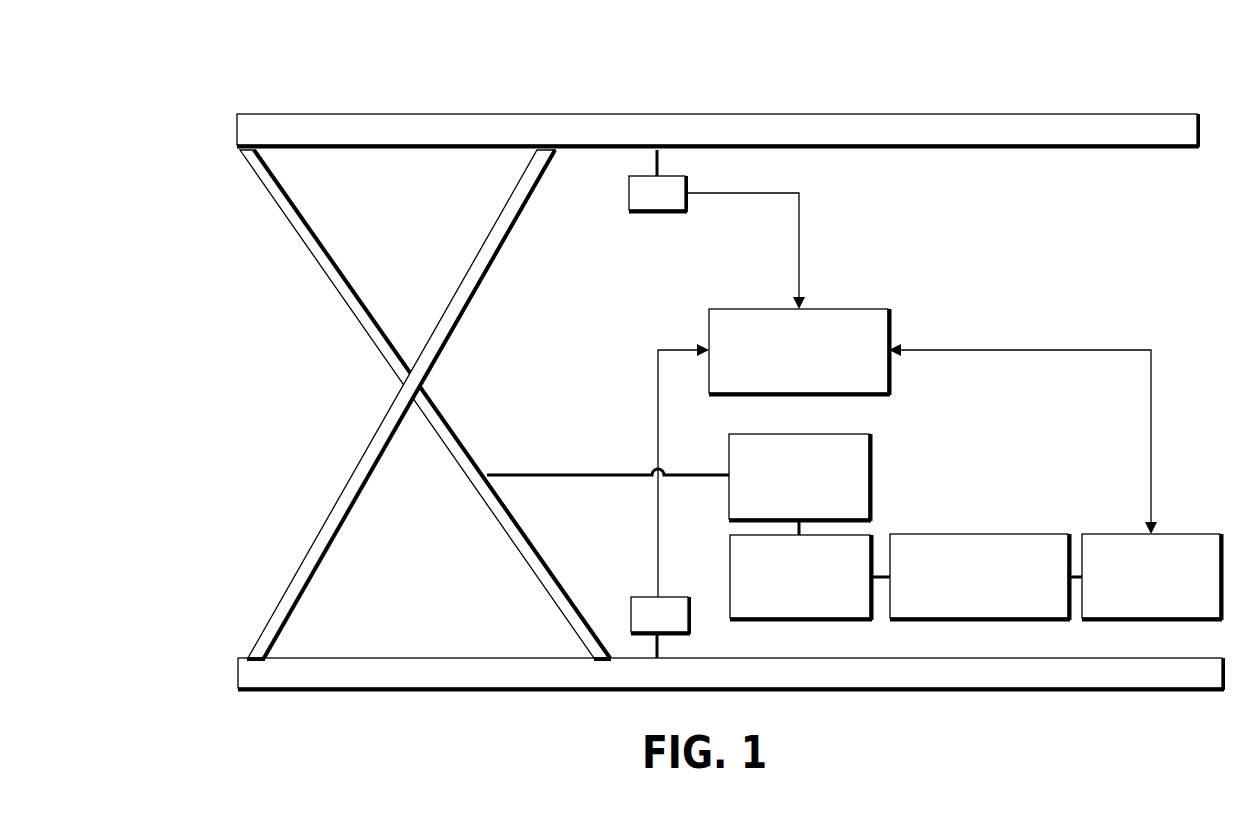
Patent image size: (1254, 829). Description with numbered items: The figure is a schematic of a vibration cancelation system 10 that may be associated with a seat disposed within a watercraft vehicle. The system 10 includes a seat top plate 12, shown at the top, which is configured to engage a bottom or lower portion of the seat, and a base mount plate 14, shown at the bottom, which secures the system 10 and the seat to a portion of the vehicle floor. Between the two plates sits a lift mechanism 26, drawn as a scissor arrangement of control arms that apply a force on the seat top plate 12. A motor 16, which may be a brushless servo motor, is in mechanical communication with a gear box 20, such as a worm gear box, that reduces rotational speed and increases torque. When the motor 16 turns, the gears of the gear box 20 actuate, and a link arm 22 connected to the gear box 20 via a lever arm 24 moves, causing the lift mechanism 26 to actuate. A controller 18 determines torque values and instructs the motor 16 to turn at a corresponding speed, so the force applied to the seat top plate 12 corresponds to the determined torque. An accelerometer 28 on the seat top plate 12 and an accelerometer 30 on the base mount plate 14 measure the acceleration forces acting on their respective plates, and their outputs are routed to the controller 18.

The vibration cancelation system 10 is at (176, 88).
The seat top plate 12 is at (484, 106).
The base mount plate 14 is at (482, 651).
The motor 16 is at (1109, 531).
The controller 18 is at (758, 306).
The gear box 20 is at (981, 531).
The link arm 22 is at (754, 430).
The lever arm 24 is at (733, 549).
The lift mechanism 26 is at (395, 404).
The accelerometer 28 is at (616, 196).
The accelerometer 30 is at (648, 587).